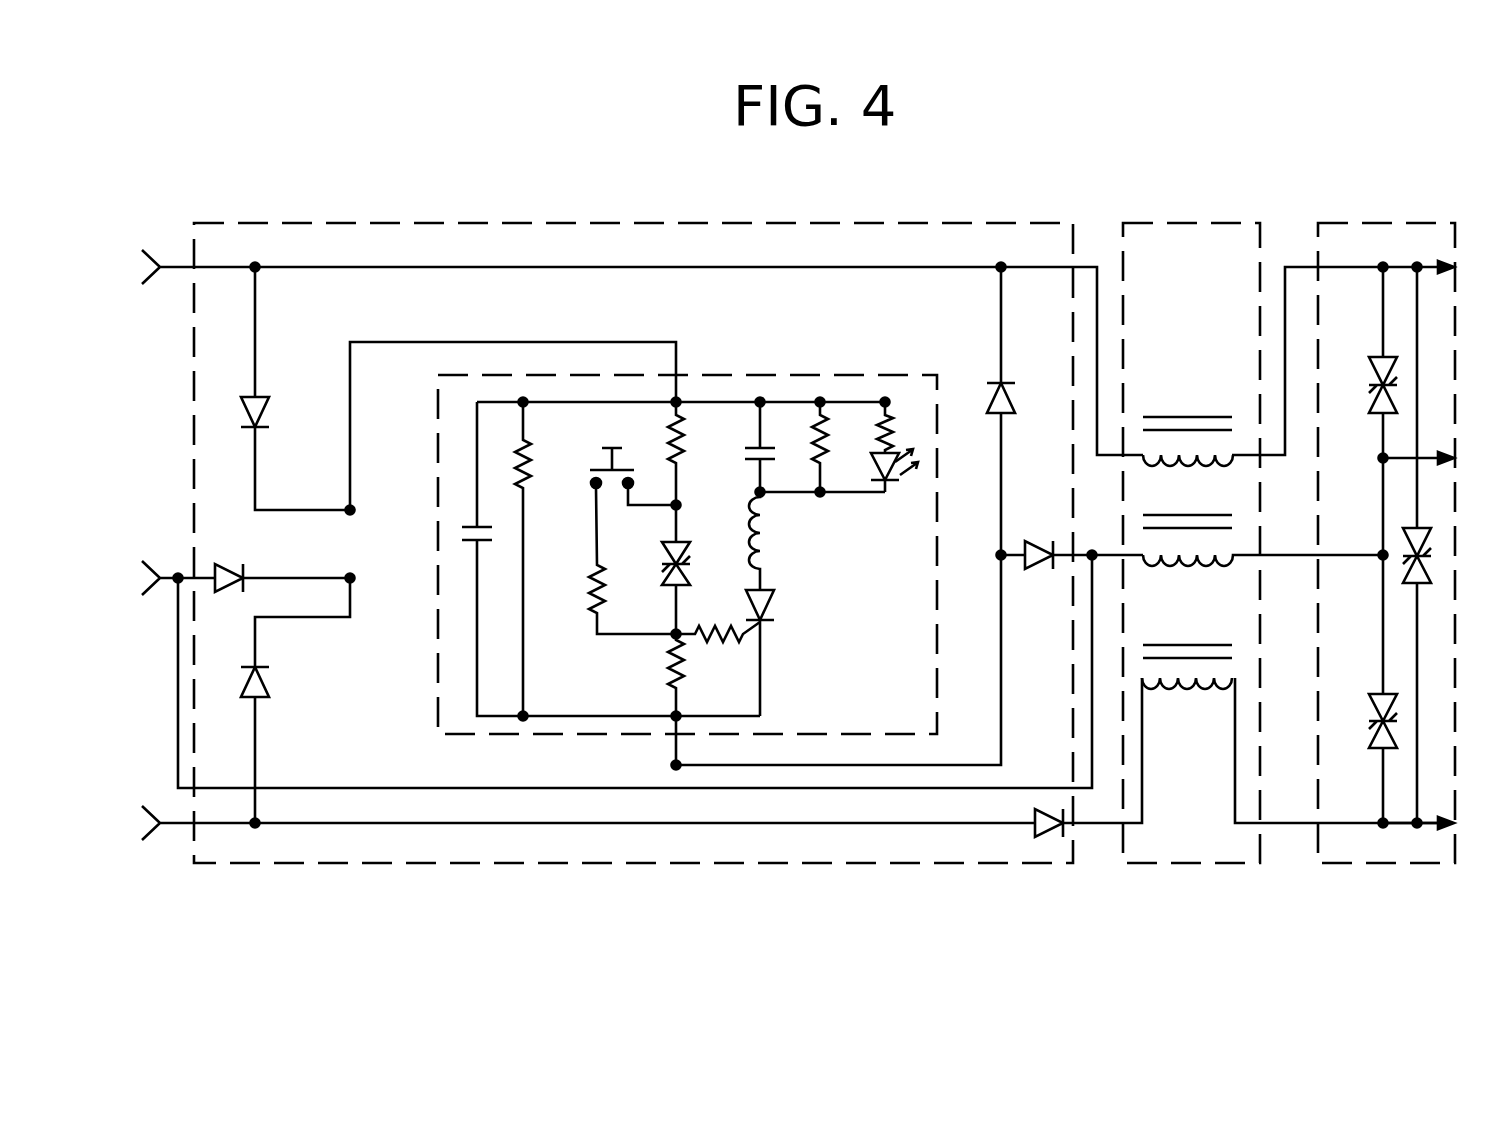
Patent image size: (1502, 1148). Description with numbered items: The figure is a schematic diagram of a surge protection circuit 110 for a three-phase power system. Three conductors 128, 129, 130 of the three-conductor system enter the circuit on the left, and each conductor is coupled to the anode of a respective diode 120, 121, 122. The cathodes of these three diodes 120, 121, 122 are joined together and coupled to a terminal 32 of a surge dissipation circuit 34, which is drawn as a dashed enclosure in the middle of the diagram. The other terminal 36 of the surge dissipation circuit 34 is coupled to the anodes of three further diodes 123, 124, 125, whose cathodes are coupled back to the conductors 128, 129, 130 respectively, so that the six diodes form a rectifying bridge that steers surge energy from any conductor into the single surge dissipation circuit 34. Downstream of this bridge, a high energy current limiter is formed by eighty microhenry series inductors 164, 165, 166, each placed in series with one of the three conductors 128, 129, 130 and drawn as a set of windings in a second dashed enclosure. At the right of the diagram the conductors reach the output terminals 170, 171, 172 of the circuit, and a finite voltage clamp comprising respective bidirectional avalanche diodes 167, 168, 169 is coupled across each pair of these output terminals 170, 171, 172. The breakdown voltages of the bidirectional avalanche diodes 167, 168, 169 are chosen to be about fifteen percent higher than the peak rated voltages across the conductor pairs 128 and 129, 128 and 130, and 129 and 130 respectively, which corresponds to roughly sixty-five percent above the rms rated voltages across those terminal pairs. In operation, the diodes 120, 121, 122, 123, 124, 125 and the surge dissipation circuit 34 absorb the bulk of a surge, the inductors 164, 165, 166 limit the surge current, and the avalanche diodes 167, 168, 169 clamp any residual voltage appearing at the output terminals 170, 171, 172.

The surge protection circuit 110 is at (636, 214).
The terminal 32 is at (678, 344).
The surge dissipation circuit 34 is at (880, 371).
The terminal 36 is at (676, 765).
The diode 120 is at (267, 410).
The diode 121 is at (229, 574).
The diode 122 is at (265, 688).
The diode 123 is at (1025, 400).
The diode 124 is at (1033, 568).
The diode 125 is at (1038, 836).
The conductor 128 is at (150, 262).
The conductor 129 is at (150, 572).
The conductor 130 is at (140, 835).
The series inductor 164 is at (1180, 450).
The series inductor 165 is at (1188, 547).
The series inductor 166 is at (1190, 702).
The bidirectional avalanche diode 167 is at (1378, 378).
The bidirectional avalanche diode 168 is at (1425, 540).
The bidirectional avalanche diode 169 is at (1395, 705).
The output terminal 170 is at (1442, 262).
The output terminal 171 is at (1425, 458).
The output terminal 172 is at (1420, 843).